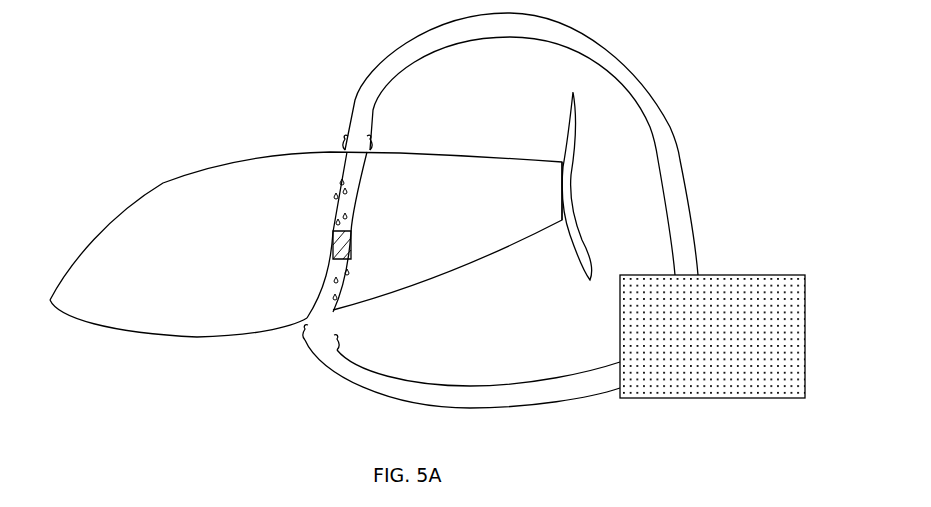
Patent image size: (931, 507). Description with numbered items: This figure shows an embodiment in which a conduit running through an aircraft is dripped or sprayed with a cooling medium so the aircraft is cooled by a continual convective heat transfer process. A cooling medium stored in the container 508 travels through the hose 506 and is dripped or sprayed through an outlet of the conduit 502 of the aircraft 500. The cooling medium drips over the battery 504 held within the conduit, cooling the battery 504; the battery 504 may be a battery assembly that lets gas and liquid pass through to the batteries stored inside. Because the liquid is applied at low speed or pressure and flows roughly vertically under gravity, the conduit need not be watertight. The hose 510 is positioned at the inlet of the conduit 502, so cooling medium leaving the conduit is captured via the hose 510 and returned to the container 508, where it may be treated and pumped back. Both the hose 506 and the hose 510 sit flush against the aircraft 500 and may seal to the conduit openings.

The aircraft 500 is at (101, 240).
The conduit 502 is at (334, 210).
The battery 504 is at (334, 251).
The hose 506 is at (398, 76).
The container 508 is at (620, 352).
The hose 510 is at (517, 392).